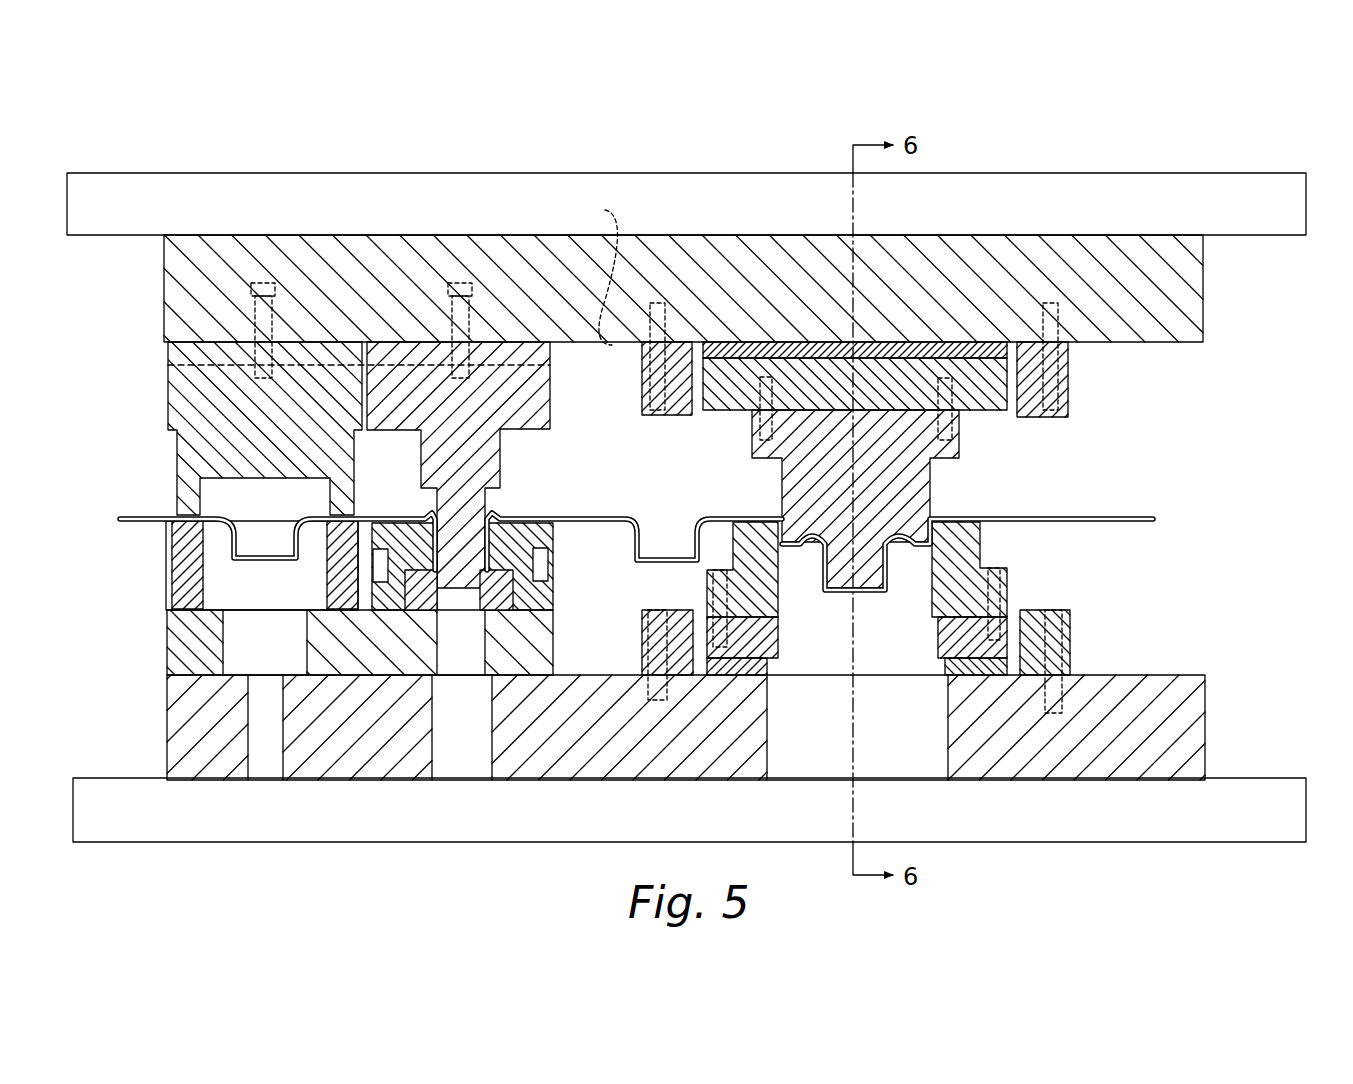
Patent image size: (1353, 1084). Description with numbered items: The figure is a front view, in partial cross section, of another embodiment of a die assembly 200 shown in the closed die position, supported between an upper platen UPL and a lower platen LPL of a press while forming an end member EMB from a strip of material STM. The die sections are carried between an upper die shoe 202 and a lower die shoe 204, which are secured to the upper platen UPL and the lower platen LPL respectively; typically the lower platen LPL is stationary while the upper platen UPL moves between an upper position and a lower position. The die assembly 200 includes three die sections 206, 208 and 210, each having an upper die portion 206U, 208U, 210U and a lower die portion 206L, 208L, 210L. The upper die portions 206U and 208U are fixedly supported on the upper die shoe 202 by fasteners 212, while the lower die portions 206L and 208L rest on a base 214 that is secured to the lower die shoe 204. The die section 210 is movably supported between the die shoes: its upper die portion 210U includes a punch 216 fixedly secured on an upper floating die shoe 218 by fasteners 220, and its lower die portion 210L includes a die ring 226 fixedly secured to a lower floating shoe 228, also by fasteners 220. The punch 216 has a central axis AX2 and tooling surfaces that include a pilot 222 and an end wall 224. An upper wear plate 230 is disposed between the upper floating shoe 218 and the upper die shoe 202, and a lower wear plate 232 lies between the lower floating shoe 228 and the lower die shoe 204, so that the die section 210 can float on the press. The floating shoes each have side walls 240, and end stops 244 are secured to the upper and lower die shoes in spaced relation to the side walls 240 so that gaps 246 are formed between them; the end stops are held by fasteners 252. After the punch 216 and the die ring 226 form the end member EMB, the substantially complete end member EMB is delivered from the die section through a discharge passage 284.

The die assembly 200 is at (1209, 432).
The upper die shoe 202 is at (420, 245).
The lower die shoe 204 is at (370, 770).
The die section 206 is at (215, 476).
The upper die portion 206U is at (168, 395).
The lower die portion 206L is at (185, 558).
The die section 208 is at (501, 476).
The upper die portion 208U is at (553, 385).
The lower die portion 208L is at (530, 590).
The die section 210 is at (885, 513).
The upper die portion 210U is at (728, 448).
The lower die portion 210L is at (1025, 565).
The fasteners 212 is at (282, 292).
The base 214 is at (160, 648).
The punch 216 is at (930, 470).
The upper floating die shoe 218 is at (978, 415).
The fasteners 220 is at (968, 360).
The pilot 222 is at (850, 570).
The end wall 224 is at (930, 500).
The die ring 226 is at (980, 548).
The lower floating shoe 228 is at (1000, 615).
The upper wear plate 230 is at (795, 348).
The lower wear plate 232 is at (755, 670).
The side walls 240 is at (712, 377).
The end stops 244 is at (1068, 362).
The gaps 246 is at (1012, 348).
The fasteners 252 is at (1120, 633).
The discharge passage 284 is at (905, 592).
The upper platen UPL is at (230, 172).
The lower platen LPL is at (215, 830).
The strip of material STM is at (1128, 519).
The end member EMB is at (815, 603).
The central axis AX2 is at (857, 220).